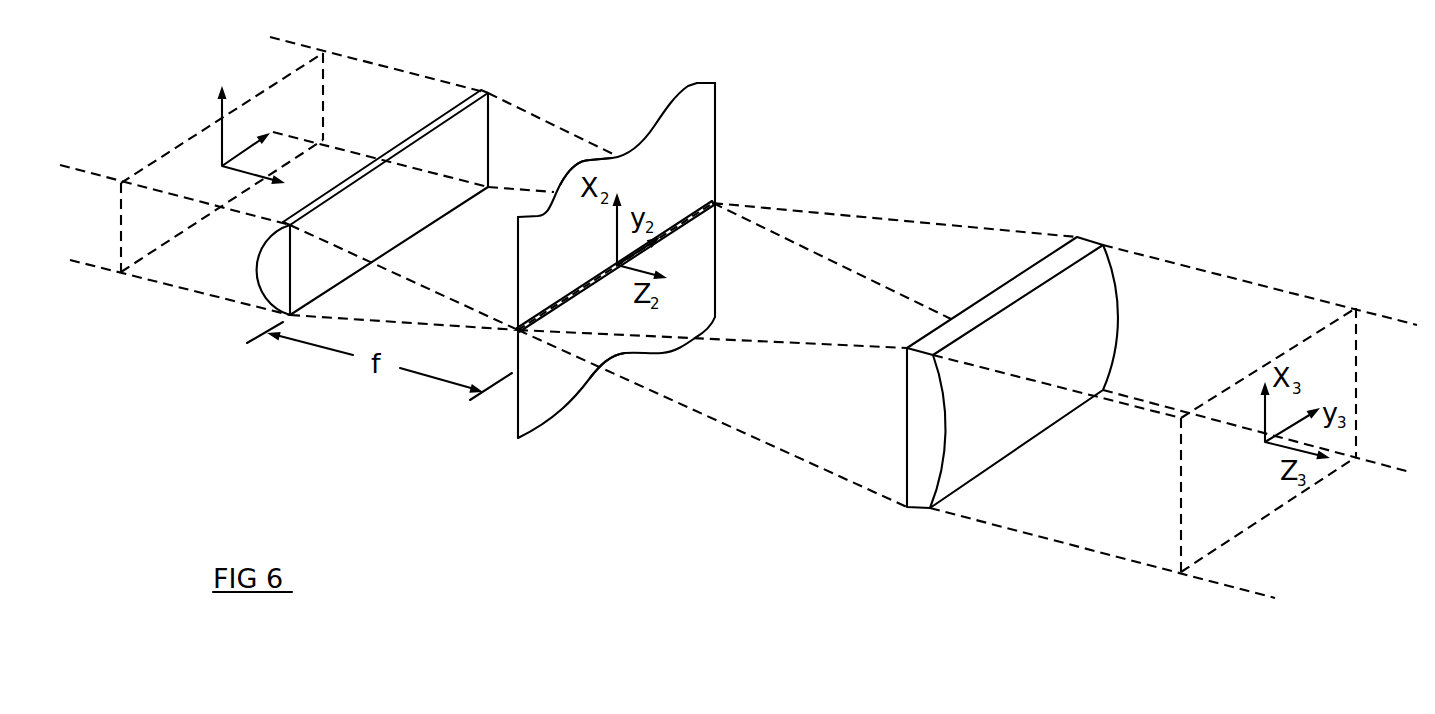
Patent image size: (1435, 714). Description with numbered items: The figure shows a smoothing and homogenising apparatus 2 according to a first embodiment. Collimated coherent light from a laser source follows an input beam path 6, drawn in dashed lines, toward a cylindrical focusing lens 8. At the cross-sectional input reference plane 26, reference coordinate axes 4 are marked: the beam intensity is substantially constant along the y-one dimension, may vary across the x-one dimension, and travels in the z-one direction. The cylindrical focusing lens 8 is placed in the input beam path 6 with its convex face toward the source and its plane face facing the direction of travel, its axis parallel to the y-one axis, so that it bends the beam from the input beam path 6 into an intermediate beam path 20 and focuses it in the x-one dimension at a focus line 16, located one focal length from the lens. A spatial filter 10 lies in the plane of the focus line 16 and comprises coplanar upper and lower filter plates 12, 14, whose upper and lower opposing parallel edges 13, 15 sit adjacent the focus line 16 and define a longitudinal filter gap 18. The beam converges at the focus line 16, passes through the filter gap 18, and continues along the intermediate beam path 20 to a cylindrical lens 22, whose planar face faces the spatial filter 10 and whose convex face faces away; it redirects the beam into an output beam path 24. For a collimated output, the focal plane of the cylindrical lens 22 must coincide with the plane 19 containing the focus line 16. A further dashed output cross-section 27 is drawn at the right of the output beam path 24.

The smoothing and homogenising apparatus 2 is at (235, 467).
The reference coordinate axes 4 is at (220, 112).
The input beam path 6 is at (382, 67).
The cylindrical focusing lens 8 is at (267, 277).
The spatial filter 10 is at (518, 446).
The upper filter plate 12 is at (695, 100).
The upper edge 13 is at (693, 203).
The lower filter plate 14 is at (603, 345).
The lower edge 15 is at (695, 227).
The focus line 16 is at (547, 310).
The filter gap 18 is at (717, 198).
The plane 19 is at (633, 123).
The intermediate beam path 20 is at (757, 438).
The cylindrical lens 22 is at (918, 473).
The output beam path 24 is at (1187, 263).
The input reference plane 26 is at (118, 250).
The output beam cross-section 27 is at (1333, 350).